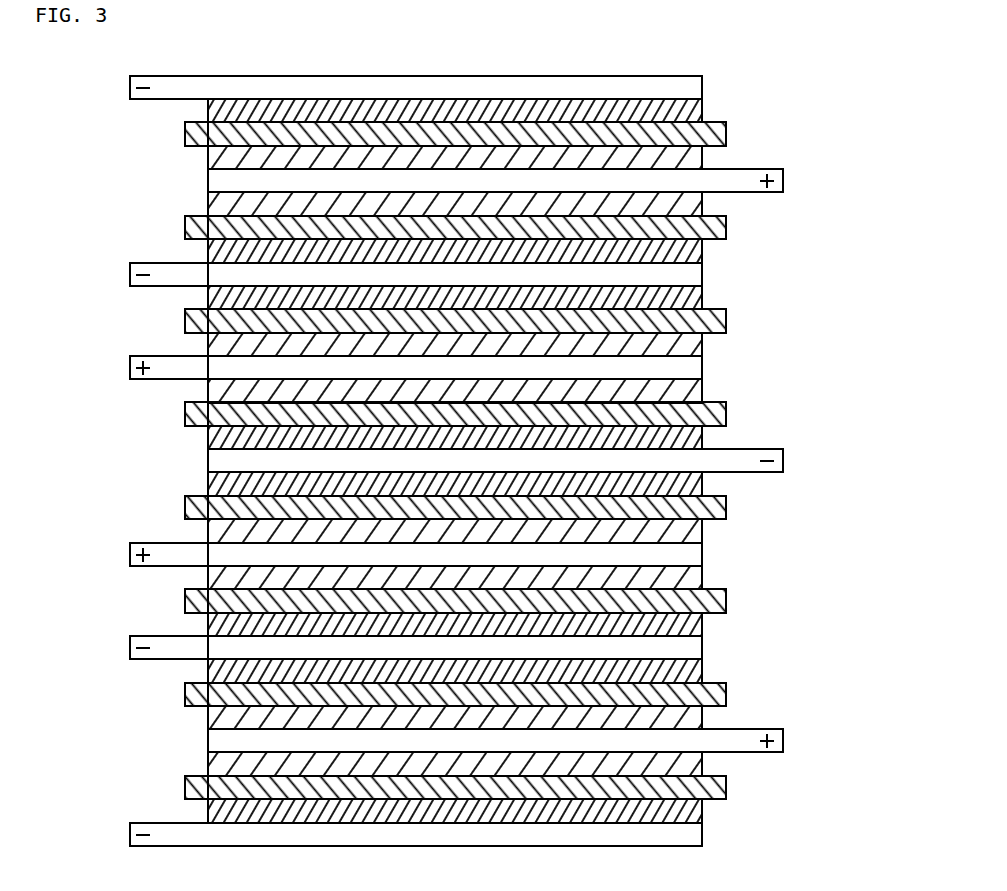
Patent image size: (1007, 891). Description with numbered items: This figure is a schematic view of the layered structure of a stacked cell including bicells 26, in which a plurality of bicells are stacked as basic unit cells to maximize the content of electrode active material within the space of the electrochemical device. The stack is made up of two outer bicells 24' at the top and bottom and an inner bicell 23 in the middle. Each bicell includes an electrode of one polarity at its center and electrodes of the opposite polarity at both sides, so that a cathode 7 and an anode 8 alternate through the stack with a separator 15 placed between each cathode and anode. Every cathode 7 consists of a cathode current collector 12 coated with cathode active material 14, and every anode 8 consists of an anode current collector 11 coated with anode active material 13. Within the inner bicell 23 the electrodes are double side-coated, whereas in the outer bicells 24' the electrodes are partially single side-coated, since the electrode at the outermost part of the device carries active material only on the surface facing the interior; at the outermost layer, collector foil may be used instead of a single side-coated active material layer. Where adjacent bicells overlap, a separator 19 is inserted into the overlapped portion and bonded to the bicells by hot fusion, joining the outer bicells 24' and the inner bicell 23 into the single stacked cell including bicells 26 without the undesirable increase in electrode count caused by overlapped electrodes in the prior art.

The cathode 7 is at (847, 137).
The anode 8 is at (778, 73).
The anode current collector 11 is at (695, 93).
The cathode current collector 12 is at (783, 183).
The anode active material 13 is at (702, 116).
The cathode active material 14 is at (688, 163).
The separator 15 is at (185, 136).
The separator 19 is at (185, 323).
The bicell 23 is at (116, 335).
The bicell 24' is at (85, 472).
The stacked cell including bicells 26 is at (838, 389).